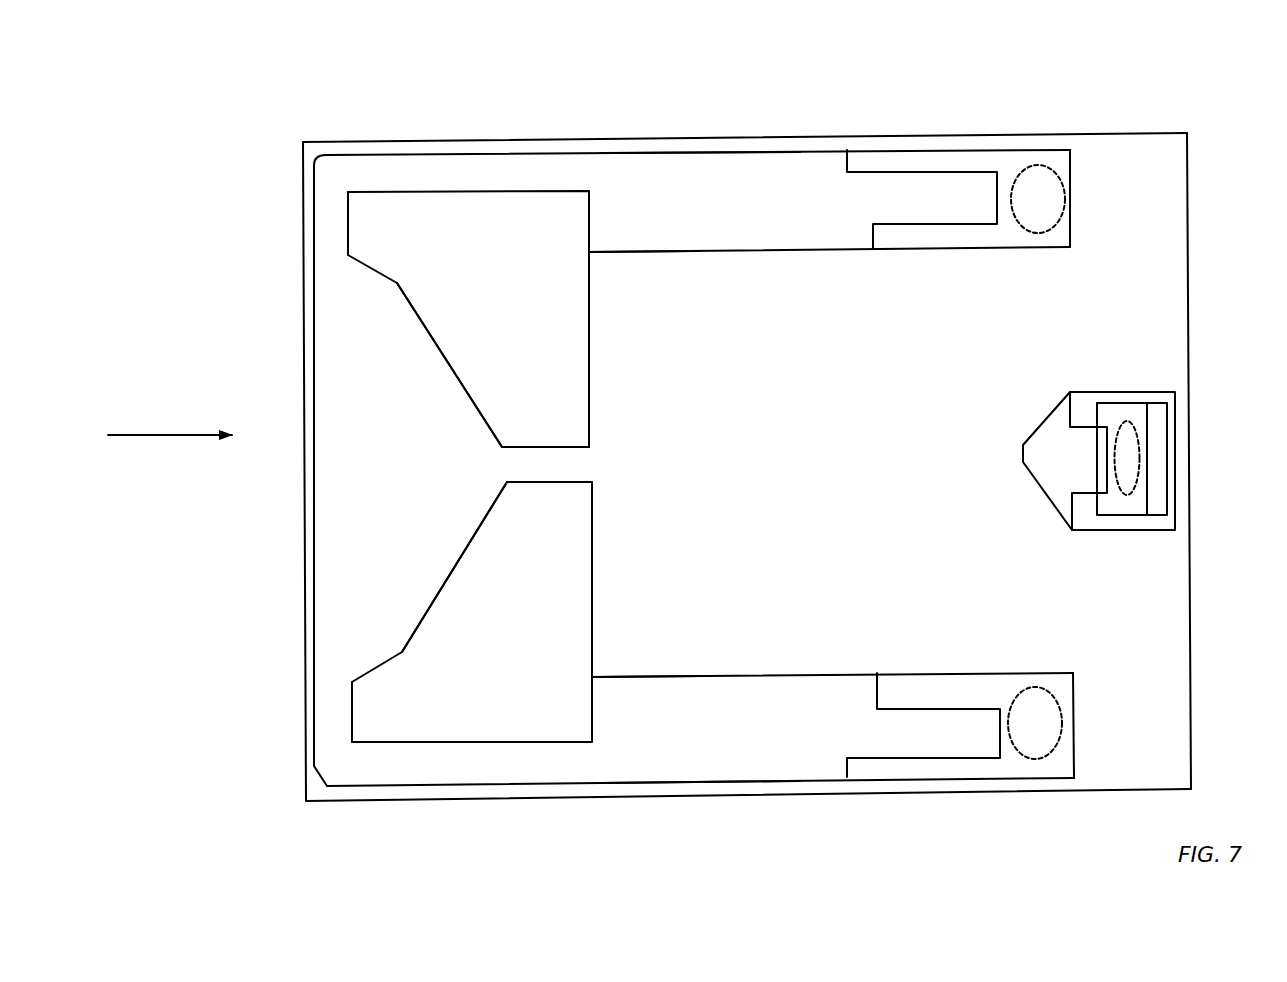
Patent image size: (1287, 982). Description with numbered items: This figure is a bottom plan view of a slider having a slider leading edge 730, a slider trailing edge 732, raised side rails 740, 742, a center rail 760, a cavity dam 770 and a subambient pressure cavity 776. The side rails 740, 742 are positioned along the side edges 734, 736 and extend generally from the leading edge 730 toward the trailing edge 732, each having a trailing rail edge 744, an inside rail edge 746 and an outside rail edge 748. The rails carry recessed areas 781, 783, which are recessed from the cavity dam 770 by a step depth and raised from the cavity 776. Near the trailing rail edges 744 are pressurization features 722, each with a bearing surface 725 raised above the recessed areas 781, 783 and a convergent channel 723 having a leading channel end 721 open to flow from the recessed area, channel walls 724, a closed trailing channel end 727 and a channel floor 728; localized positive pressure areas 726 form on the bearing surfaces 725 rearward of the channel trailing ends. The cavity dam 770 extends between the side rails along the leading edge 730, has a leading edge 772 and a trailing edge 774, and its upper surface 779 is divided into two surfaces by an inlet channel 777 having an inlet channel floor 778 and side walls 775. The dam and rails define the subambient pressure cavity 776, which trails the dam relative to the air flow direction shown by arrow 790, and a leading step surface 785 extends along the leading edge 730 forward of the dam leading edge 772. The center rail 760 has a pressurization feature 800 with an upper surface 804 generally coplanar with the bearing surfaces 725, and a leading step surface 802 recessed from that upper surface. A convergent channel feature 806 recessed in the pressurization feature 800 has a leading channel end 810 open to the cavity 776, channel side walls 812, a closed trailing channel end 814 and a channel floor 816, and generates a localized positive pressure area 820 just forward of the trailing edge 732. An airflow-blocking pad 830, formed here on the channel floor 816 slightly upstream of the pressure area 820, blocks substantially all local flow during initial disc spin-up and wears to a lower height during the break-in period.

The slider leading edge 730 is at (303, 333).
The slider trailing edge 732 is at (1190, 257).
The side edge 734 is at (597, 138).
The side edge 736 is at (880, 783).
The outside rail edge 748 is at (705, 153).
The cavity dam 770 is at (429, 258).
The leading edge 772 is at (347, 213).
The trailing edge 774 is at (590, 397).
The side walls 775 is at (513, 450).
The subambient pressure cavity 776 is at (759, 465).
The inlet channel 777 is at (527, 475).
The inlet channel floor 778 is at (582, 462).
The upper surface 779 is at (528, 350).
The leading step surface 785 is at (348, 500).
The arrow 790 is at (170, 417).
The leading channel end 721 is at (870, 192).
The pressurization feature 722 is at (1047, 147).
The convergent channel 723 is at (983, 186).
The channel walls 724 is at (938, 163).
The bearing surface 725 is at (942, 245).
The localized positive pressure area 726 is at (1063, 197).
The trailing channel end 727 is at (998, 205).
The channel floor 728 is at (901, 211).
The side rail 740 is at (786, 671).
The side rail 742 is at (735, 255).
The trailing rail edge 744 is at (1068, 235).
The inside rail edge 746 is at (620, 253).
The recessed area 781 is at (756, 176).
The recessed area 783 is at (752, 768).
The pressurization feature 800 is at (1129, 532).
The leading step surface 802 is at (1073, 467).
The upper surface 804 is at (1170, 393).
The convergent channel feature 806 is at (1071, 444).
The leading channel end 810 is at (1040, 472).
The channel side walls 812 is at (1070, 402).
The trailing channel end 814 is at (1093, 475).
The channel floor 816 is at (1073, 457).
The localized positive pressure area 820 is at (1140, 443).
The airflow-blocking pad 830 is at (1104, 437).
The center rail 760 is at (1133, 391).